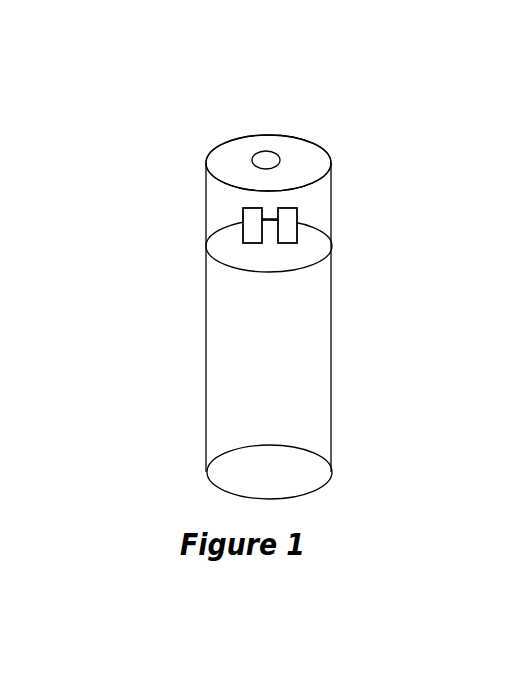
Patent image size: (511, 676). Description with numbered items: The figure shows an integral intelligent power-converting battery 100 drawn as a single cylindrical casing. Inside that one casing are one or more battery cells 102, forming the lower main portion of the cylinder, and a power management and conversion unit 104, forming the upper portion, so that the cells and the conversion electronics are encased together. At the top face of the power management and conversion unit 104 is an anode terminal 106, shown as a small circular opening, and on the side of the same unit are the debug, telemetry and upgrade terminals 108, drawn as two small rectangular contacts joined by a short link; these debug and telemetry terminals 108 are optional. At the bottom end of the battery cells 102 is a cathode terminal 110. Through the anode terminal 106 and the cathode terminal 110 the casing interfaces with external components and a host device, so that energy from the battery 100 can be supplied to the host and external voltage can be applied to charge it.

The integral intelligent power-converting battery 100 is at (274, 273).
The battery cells 102 is at (172, 365).
The power management and conversion unit 104 is at (188, 207).
The anode terminal 106 is at (282, 152).
The debug, telemetry and upgrade terminals 108 is at (298, 224).
The cathode terminal 110 is at (305, 492).